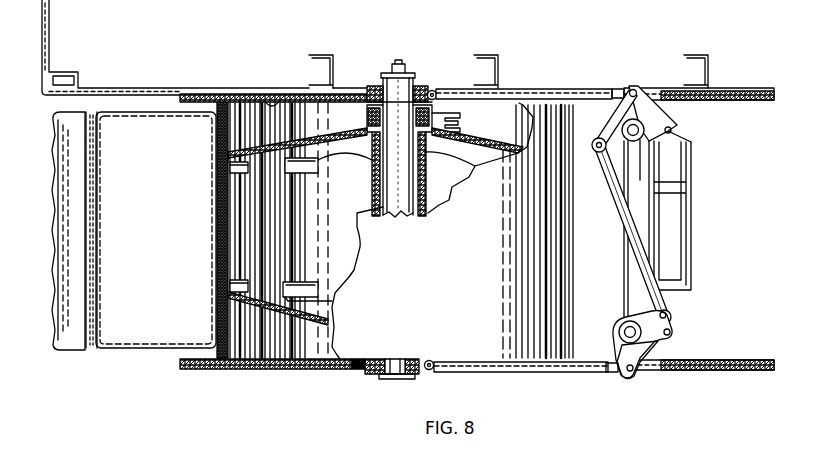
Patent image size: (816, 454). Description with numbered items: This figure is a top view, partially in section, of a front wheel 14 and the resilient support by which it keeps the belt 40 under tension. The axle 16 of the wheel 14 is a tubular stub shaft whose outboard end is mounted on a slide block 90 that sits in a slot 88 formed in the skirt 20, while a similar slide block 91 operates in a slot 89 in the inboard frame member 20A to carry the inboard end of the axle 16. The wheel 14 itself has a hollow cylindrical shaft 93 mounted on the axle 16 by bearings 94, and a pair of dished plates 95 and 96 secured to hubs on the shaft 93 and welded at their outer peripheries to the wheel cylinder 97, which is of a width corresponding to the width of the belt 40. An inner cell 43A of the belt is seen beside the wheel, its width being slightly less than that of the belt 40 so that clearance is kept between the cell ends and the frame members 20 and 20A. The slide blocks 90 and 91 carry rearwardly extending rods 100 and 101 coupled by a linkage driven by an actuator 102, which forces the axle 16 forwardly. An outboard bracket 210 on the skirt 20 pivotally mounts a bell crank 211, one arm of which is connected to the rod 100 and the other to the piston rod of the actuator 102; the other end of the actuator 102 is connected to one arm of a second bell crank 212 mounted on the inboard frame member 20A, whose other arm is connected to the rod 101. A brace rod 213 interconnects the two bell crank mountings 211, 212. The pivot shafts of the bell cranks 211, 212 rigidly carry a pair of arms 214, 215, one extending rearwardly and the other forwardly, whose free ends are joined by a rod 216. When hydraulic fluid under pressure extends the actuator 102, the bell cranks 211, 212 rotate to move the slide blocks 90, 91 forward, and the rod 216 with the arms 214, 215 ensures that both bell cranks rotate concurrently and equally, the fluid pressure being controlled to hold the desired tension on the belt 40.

The front wheel 14 is at (448, 297).
The axle 16 is at (395, 380).
The skirt 20 is at (272, 374).
The inboard frame member 20A is at (259, 89).
The belt 40 is at (213, 357).
The inner cell 43A is at (181, 211).
The slot 88 is at (360, 357).
The slot 89 is at (360, 88).
The slide block 90 is at (365, 373).
The slide block 91 is at (420, 87).
The hollow cylindrical shaft 93 is at (429, 197).
The bearings 94 is at (372, 118).
The dished plate 95 is at (349, 162).
The dished plate 96 is at (315, 282).
The wheel cylinder 97 is at (217, 242).
The rod 100 is at (520, 373).
The rod 101 is at (543, 86).
The actuator 102 is at (691, 163).
The outboard bracket 210 is at (610, 353).
The bell crank 211 is at (656, 345).
The bell crank 212 is at (668, 112).
The brace rod 213 is at (624, 259).
The arm 214 is at (647, 317).
The arm 215 is at (614, 126).
The rod 216 is at (621, 194).